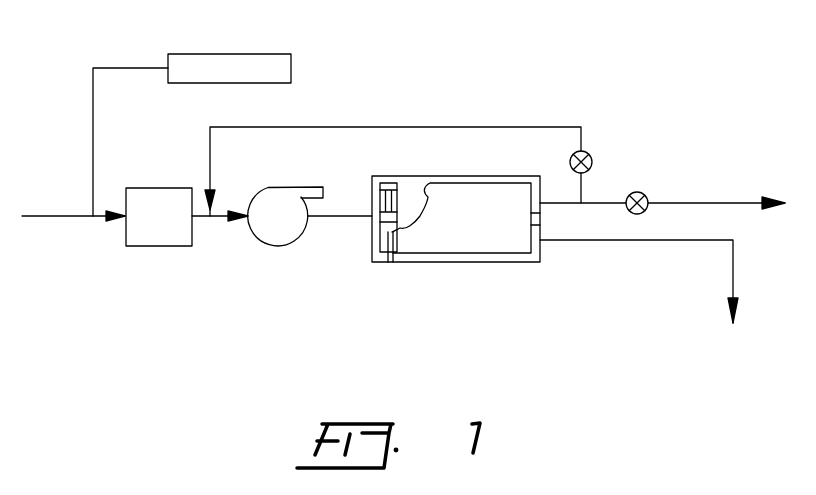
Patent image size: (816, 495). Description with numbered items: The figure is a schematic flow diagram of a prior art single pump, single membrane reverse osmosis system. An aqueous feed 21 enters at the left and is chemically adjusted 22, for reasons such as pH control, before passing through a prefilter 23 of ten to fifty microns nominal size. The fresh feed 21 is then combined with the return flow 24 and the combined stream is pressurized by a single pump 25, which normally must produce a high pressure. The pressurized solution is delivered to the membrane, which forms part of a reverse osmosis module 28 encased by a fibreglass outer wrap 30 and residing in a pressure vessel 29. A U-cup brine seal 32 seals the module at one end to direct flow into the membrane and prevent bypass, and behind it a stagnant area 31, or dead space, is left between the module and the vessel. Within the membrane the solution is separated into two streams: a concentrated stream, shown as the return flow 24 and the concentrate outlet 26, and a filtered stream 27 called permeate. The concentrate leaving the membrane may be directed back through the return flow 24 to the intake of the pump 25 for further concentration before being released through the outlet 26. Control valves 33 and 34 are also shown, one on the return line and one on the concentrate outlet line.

The aqueous feed 21 is at (37, 218).
The chemical adjustment 22 is at (218, 69).
The prefilter 23 is at (147, 233).
The return flow 24 is at (210, 150).
The single pump 25 is at (270, 233).
The concentrated stream 26 is at (708, 200).
The filtered stream 27 is at (733, 272).
The reverse osmosis module 28 is at (457, 228).
The pressure vessel 29 is at (402, 263).
The fibreglass outer wrap 30 is at (440, 253).
The stagnant area 31 is at (497, 258).
The U-cup brine seal 32 is at (392, 177).
The control valve 33 is at (587, 152).
The control valve 34 is at (640, 192).